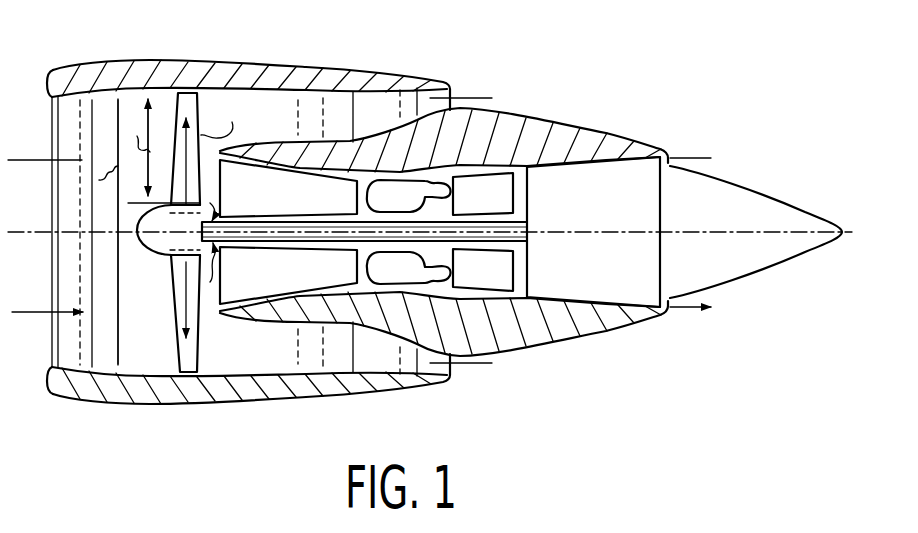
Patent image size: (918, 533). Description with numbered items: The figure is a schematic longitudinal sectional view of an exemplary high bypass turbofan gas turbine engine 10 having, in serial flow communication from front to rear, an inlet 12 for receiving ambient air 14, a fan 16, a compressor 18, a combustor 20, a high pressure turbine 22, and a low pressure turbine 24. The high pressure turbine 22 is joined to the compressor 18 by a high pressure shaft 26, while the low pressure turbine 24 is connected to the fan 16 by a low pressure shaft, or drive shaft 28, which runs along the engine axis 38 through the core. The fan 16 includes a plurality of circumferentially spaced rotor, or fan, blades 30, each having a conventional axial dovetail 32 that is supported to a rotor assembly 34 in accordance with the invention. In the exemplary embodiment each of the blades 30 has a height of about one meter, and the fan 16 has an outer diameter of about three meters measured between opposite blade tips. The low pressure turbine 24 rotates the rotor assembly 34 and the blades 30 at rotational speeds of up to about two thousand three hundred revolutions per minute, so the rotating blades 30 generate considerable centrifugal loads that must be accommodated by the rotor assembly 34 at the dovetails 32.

The turbofan gas turbine engine 10 is at (404, 60).
The inlet 12 is at (52, 95).
The ambient air 14 is at (15, 140).
The fan 16 is at (203, 97).
The compressor 18 is at (273, 208).
The combustor 20 is at (382, 286).
The high pressure turbine 22 is at (500, 205).
The low pressure turbine 24 is at (611, 195).
The high pressure shaft 26 is at (437, 212).
The drive shaft 28 is at (517, 241).
The fan blade 30 is at (200, 350).
The axial dovetail 32 is at (183, 252).
The rotor assembly 34 is at (163, 224).
The engine centerline axis 38 is at (43, 232).